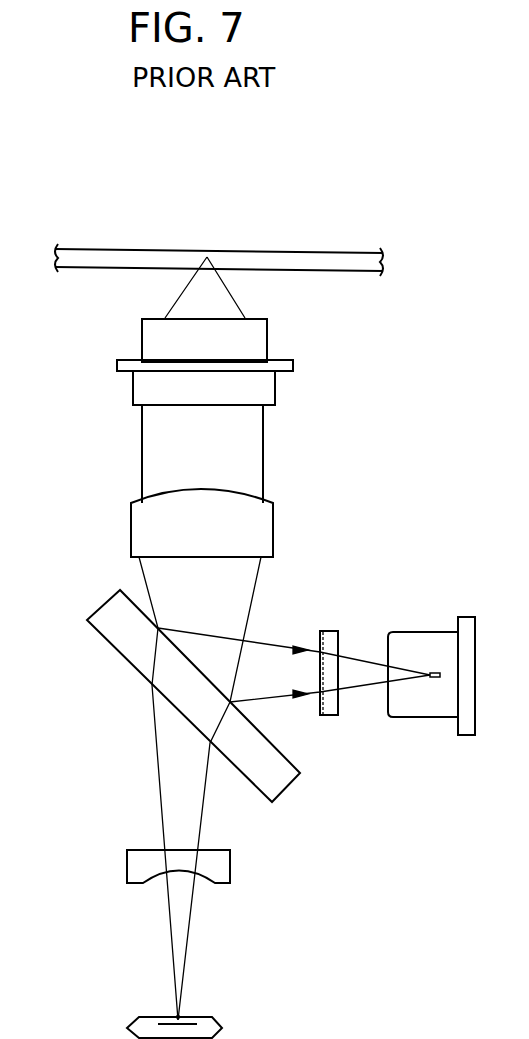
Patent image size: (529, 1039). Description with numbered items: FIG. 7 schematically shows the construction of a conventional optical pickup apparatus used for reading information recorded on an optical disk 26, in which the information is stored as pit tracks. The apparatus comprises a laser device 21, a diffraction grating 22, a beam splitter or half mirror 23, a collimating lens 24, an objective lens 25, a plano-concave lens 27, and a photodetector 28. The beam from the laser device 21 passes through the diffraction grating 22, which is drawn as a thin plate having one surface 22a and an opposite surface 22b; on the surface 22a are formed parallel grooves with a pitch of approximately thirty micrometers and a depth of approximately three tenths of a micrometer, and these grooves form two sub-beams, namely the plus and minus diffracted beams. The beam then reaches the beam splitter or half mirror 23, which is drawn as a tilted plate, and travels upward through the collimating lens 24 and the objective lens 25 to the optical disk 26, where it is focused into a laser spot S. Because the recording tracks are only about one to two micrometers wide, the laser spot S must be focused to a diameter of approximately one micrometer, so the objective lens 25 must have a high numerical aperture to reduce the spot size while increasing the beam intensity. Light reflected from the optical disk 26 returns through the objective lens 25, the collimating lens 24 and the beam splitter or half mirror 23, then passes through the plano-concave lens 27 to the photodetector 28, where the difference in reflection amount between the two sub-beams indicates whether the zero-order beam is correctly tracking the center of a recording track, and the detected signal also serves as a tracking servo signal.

The laser device 21 is at (402, 717).
The diffraction grating 22 is at (330, 631).
The surface of the diffraction grating 22a is at (318, 648).
The second surface of plate 22b is at (338, 638).
The beam splitter or half mirror 23 is at (280, 794).
The collimating lens 24 is at (273, 525).
The objective lens 25 is at (293, 366).
The optical disk 26 is at (320, 250).
The plano-concave lens 27 is at (232, 872).
The photodetector 28 is at (223, 1028).
The laser spot S is at (207, 257).